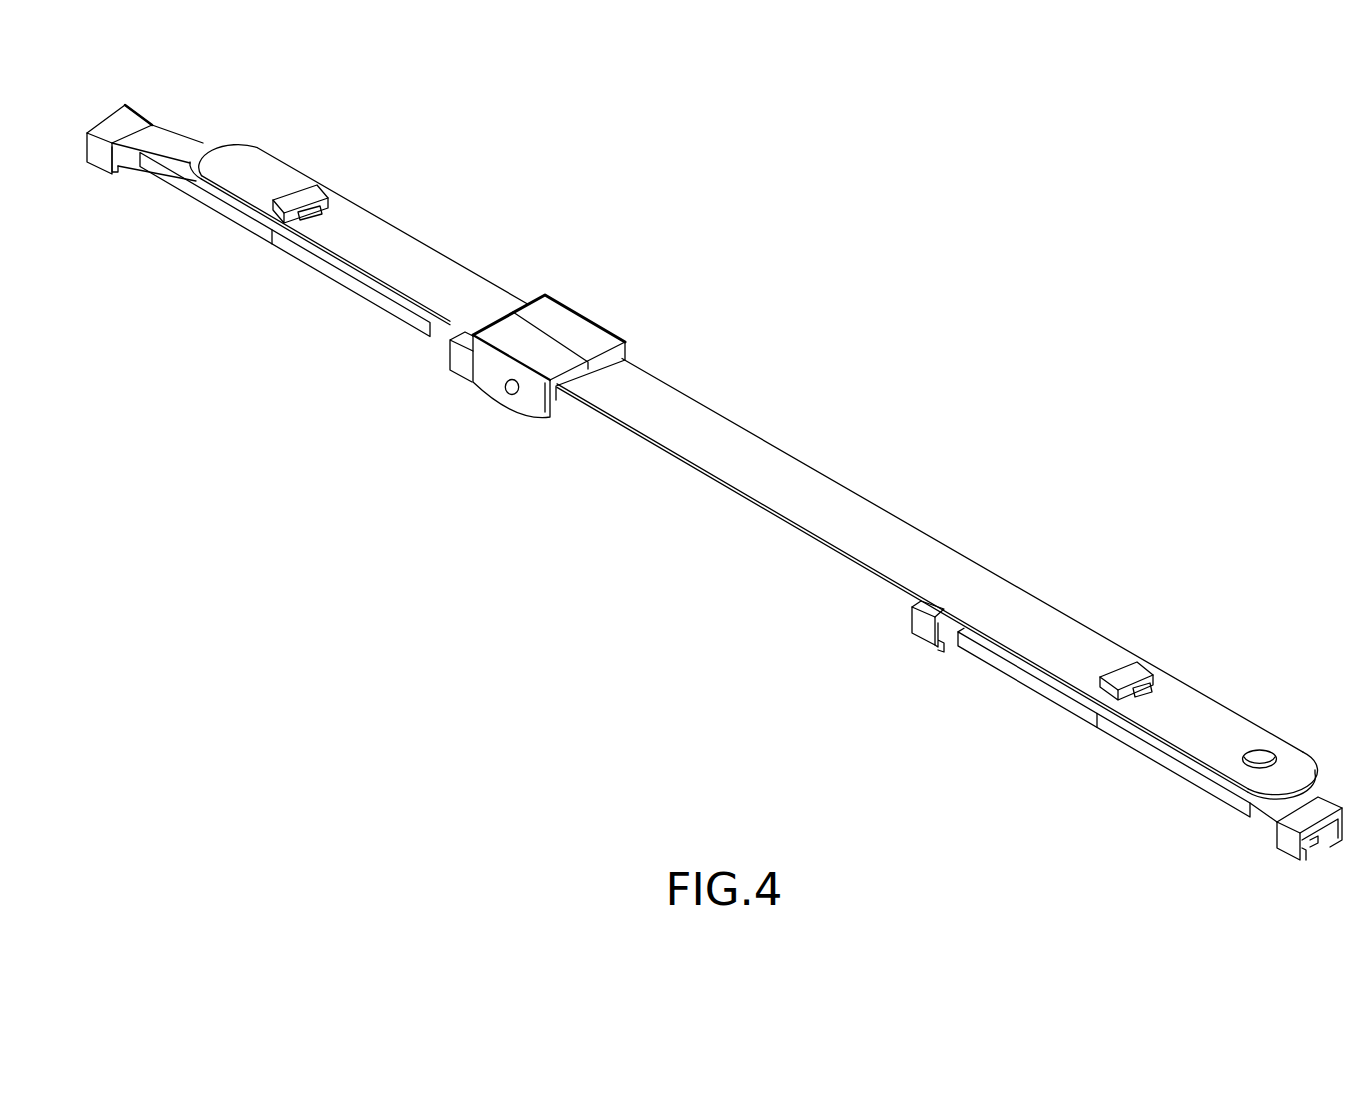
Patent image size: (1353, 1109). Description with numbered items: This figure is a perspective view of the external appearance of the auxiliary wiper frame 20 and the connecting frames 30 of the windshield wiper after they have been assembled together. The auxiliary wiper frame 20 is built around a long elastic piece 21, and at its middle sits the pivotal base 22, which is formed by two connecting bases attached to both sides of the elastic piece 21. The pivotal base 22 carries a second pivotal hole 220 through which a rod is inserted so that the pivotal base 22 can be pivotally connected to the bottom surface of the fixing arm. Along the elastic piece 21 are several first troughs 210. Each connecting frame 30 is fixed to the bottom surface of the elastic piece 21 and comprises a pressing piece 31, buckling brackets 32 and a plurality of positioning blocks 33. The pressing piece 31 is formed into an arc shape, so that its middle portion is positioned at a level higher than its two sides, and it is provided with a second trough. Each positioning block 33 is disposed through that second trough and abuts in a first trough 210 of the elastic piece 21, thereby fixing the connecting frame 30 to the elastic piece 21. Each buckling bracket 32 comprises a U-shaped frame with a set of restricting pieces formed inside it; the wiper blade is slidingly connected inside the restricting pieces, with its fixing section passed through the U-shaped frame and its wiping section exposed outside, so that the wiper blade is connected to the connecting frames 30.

The auxiliary wiper frame 20 is at (966, 512).
The elastic piece 21 is at (840, 505).
The first trough 210 is at (330, 192).
The pivotal base 22 is at (542, 352).
The second pivotal hole 220 is at (503, 392).
The connecting frame 30 is at (713, 494).
The pressing piece 31 is at (240, 226).
The buckling bracket 32 is at (96, 160).
The positioning block 33 is at (303, 196).